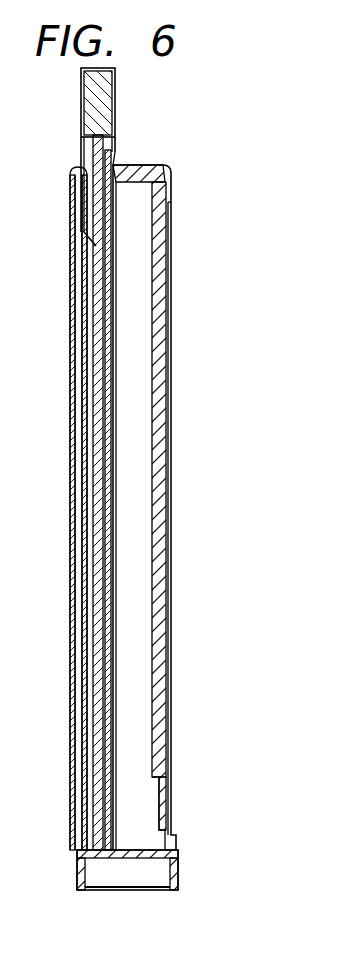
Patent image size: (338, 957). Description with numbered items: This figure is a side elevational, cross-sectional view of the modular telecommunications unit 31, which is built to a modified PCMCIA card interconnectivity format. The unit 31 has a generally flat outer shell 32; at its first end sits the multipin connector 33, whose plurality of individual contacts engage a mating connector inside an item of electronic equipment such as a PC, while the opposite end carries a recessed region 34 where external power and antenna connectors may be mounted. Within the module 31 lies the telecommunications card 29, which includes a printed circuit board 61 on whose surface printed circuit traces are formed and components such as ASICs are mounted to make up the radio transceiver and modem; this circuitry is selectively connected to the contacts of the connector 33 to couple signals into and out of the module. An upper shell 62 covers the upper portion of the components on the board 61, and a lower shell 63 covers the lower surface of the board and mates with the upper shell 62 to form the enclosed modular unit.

The modular telecommunications unit 31 is at (150, 142).
The outer shell 32 is at (168, 477).
The multipin connector 33 is at (82, 98).
The recessed region 34 is at (106, 888).
The telecommunications card 29 is at (108, 406).
The printed circuit board 61 is at (109, 508).
The upper shell 62 is at (163, 635).
The lower shell 63 is at (85, 382).